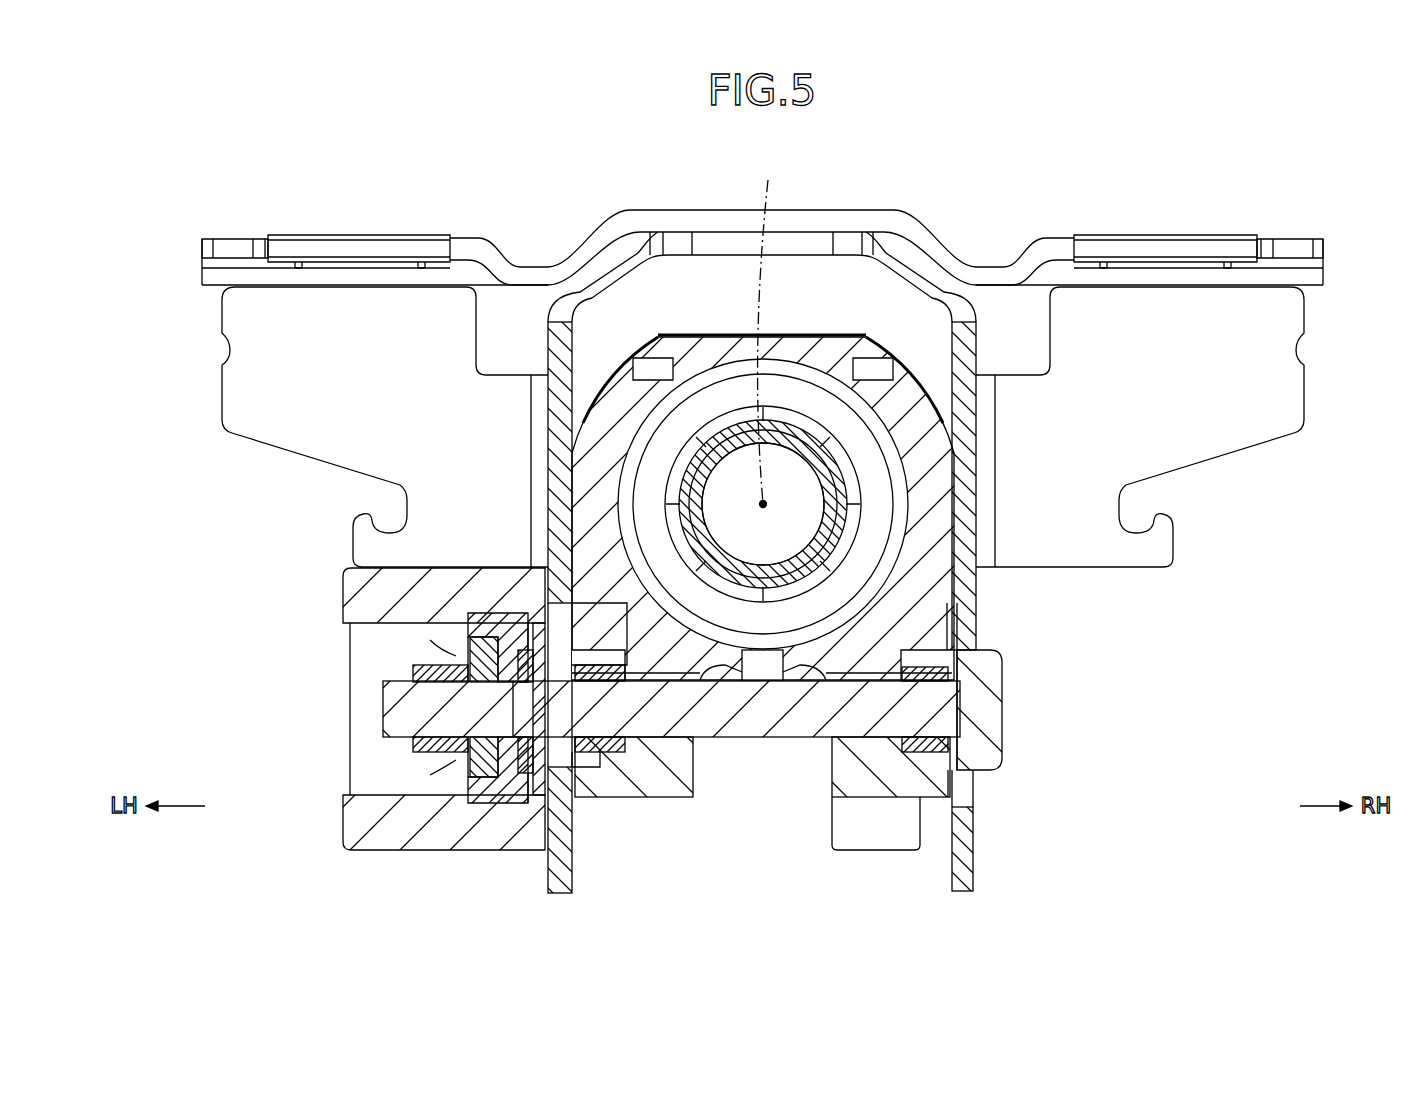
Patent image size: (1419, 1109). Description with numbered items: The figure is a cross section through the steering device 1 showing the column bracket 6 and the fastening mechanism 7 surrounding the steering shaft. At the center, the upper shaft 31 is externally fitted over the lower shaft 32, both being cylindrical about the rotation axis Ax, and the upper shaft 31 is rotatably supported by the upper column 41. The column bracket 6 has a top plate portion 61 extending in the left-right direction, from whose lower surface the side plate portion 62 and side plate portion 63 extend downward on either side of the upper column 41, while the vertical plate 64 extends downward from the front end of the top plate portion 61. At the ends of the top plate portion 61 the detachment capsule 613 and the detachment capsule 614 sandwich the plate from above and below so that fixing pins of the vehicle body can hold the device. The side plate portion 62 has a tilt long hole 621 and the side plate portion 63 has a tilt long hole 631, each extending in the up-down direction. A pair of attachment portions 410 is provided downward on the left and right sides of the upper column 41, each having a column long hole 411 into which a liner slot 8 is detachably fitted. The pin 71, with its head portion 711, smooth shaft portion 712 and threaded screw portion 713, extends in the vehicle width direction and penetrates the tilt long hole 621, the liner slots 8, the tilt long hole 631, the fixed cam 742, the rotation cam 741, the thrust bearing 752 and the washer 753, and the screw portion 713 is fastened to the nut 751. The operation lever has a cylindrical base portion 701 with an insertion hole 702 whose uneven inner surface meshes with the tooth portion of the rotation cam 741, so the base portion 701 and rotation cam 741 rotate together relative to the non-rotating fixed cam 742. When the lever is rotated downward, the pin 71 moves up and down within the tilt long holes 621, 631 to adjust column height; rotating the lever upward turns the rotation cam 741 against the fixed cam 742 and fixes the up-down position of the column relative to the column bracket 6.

The steering device 1 is at (1140, 609).
The column bracket 6 is at (903, 212).
The fastening mechanism 7 is at (400, 738).
The liner slot 8 is at (614, 740).
The upper shaft 31 is at (780, 417).
The lower shaft 32 is at (723, 443).
The upper column 41 is at (930, 497).
The top plate portion 61 is at (1047, 252).
The side plate portion 62 is at (965, 855).
The side plate portion 63 is at (560, 860).
The vertical plate 64 is at (1248, 388).
The pin 71 is at (1008, 705).
The attachment portion 410 is at (652, 772).
The column long hole 411 is at (607, 683).
The detachment capsule 613 is at (1193, 237).
The detachment capsule 614 is at (357, 237).
The tilt long hole 621 is at (962, 602).
The tilt long hole 631 is at (457, 656).
The base portion 701 is at (383, 835).
The insertion hole 702 is at (385, 767).
The head portion 711 is at (983, 750).
The shaft portion 712 is at (745, 715).
The screw portion 713 is at (400, 713).
The rotation cam 741 is at (473, 622).
The fixed cam 742 is at (488, 613).
The nut 751 is at (470, 664).
The thrust bearing 752 is at (488, 777).
The washer 753 is at (510, 790).
The rotation axis Ax is at (762, 329).